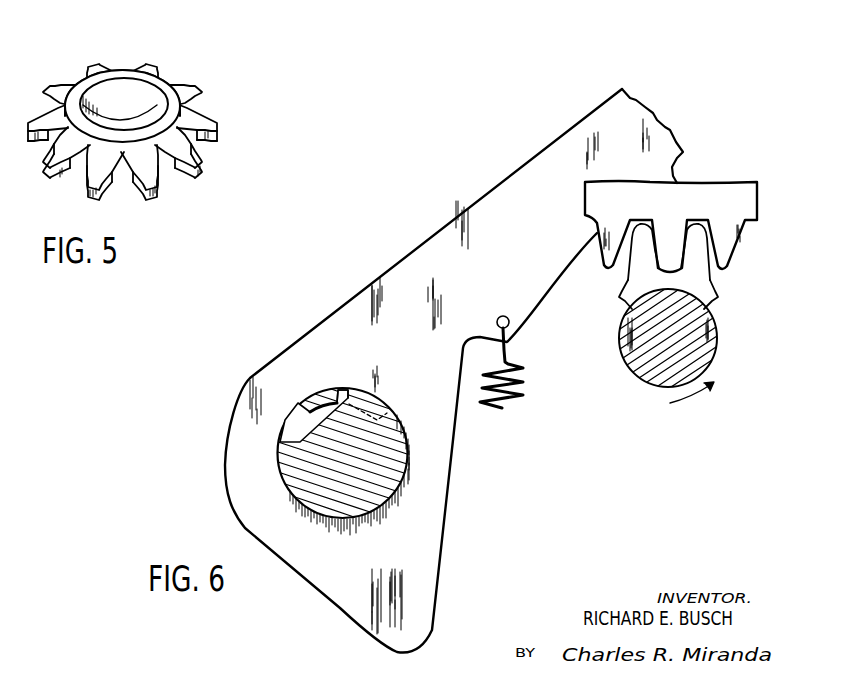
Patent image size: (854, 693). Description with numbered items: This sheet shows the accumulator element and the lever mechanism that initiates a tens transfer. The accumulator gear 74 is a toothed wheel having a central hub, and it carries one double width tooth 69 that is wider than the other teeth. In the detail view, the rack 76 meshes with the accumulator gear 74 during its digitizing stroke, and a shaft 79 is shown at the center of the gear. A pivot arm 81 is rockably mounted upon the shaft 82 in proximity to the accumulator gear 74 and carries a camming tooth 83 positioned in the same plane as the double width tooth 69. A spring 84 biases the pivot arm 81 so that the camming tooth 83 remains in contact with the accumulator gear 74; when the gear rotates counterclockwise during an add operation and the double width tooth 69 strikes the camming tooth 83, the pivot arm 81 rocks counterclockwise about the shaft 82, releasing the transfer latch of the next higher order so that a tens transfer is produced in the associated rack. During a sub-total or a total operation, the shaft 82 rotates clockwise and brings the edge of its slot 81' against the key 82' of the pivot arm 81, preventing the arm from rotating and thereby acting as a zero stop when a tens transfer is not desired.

In FIG. 5, the double width tooth 69 is at (154, 184).
In FIG. 5, the accumulator gear 74 is at (121, 72).
In FIG. 6, the accumulator gear 74 is at (696, 266).
In FIG. 6, the rack 76 is at (750, 193).
In FIG. 6, the shaft 79 is at (703, 352).
In FIG. 6, the pivot arm 81 is at (454, 371).
In FIG. 6, the slot 81' is at (307, 412).
In FIG. 6, the shaft 82 is at (300, 461).
In FIG. 6, the key 82' is at (328, 387).
In FIG. 6, the camming tooth 83 is at (668, 205).
In FIG. 6, the spring 84 is at (518, 397).